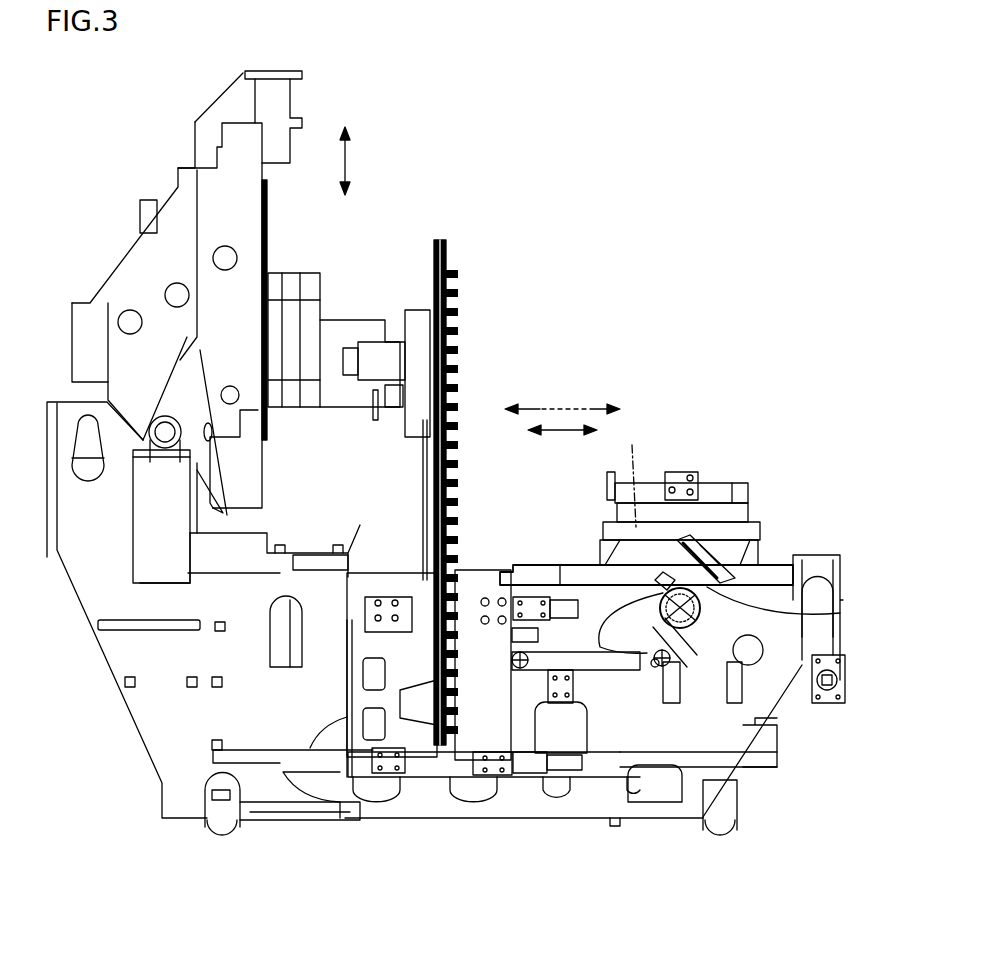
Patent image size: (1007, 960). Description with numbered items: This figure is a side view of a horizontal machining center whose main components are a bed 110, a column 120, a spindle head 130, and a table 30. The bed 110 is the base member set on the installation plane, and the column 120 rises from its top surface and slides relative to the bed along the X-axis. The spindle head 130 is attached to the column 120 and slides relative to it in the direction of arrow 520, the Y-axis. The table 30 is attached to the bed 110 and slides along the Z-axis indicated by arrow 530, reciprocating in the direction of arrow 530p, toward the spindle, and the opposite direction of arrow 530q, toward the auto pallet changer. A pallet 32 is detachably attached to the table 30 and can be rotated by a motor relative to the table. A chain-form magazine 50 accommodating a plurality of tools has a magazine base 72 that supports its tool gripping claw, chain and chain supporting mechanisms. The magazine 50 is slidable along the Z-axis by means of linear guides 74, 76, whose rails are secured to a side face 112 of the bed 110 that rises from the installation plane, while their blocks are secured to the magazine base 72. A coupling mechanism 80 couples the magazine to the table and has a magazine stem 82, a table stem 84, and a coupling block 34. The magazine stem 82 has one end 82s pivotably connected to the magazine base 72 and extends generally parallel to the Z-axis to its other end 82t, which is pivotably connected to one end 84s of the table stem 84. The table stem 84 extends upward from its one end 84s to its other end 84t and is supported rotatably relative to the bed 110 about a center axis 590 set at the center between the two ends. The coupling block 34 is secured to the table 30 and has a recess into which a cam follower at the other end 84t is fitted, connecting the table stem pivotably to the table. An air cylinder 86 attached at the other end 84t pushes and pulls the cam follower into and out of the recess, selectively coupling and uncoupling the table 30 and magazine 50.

The column 120 is at (210, 187).
The spindle head 130 is at (358, 320).
The magazine 50 is at (432, 239).
The arrow 520 is at (348, 162).
The arrow 530 is at (562, 443).
The arrow 530p is at (532, 404).
The arrow 530q is at (590, 404).
The center axis 590 is at (632, 476).
The air cylinder 86 is at (700, 540).
The pallet 32 is at (743, 490).
The table 30 is at (748, 530).
The coupling block 34 is at (670, 580).
The table stem 84 is at (720, 593).
The other end of table stem 84t is at (730, 585).
The one end of table stem 84s is at (650, 650).
The coupling mechanism 80 is at (695, 639).
The side face 112 is at (708, 685).
The bed 110 is at (528, 583).
The linear guide 74 is at (550, 597).
The magazine base 72 is at (472, 735).
The magazine stem 82 is at (607, 764).
The one end of magazine stem 82s is at (520, 668).
The other end of magazine stem 82t is at (660, 668).
The linear guide 76 is at (562, 770).